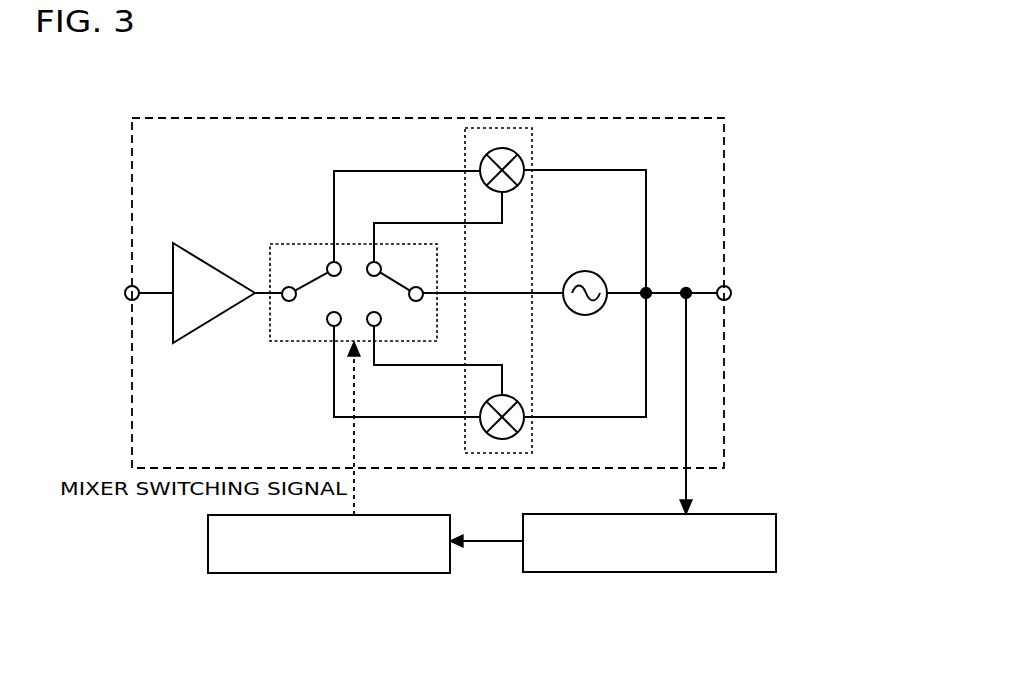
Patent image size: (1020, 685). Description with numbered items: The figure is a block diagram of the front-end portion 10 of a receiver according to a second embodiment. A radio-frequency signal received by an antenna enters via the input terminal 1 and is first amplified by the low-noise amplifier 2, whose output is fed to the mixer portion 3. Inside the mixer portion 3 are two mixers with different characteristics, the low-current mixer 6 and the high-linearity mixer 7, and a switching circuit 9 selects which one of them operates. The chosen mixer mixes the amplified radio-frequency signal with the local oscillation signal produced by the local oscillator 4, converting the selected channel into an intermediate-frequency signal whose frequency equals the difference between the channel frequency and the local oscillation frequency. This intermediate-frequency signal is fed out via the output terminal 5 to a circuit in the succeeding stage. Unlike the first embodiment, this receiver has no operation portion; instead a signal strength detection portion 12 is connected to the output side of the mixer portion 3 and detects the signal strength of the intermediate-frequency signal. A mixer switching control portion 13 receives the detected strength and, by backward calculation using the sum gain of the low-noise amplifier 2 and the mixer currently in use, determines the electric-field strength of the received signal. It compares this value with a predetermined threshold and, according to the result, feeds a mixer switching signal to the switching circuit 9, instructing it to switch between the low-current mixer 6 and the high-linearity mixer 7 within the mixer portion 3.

The input terminal 1 is at (123, 288).
The low-noise amplifier 2 is at (212, 320).
The mixer portion 3 is at (511, 291).
The local oscillator 4 is at (588, 315).
The output terminal 5 is at (730, 287).
The low-current mixer 6 is at (488, 157).
The high-linearity mixer 7 is at (487, 428).
The switching circuit 9 is at (310, 244).
The front-end portion 10 is at (583, 117).
The signal strength detection portion 12 is at (776, 540).
The mixer switching control portion 13 is at (208, 535).